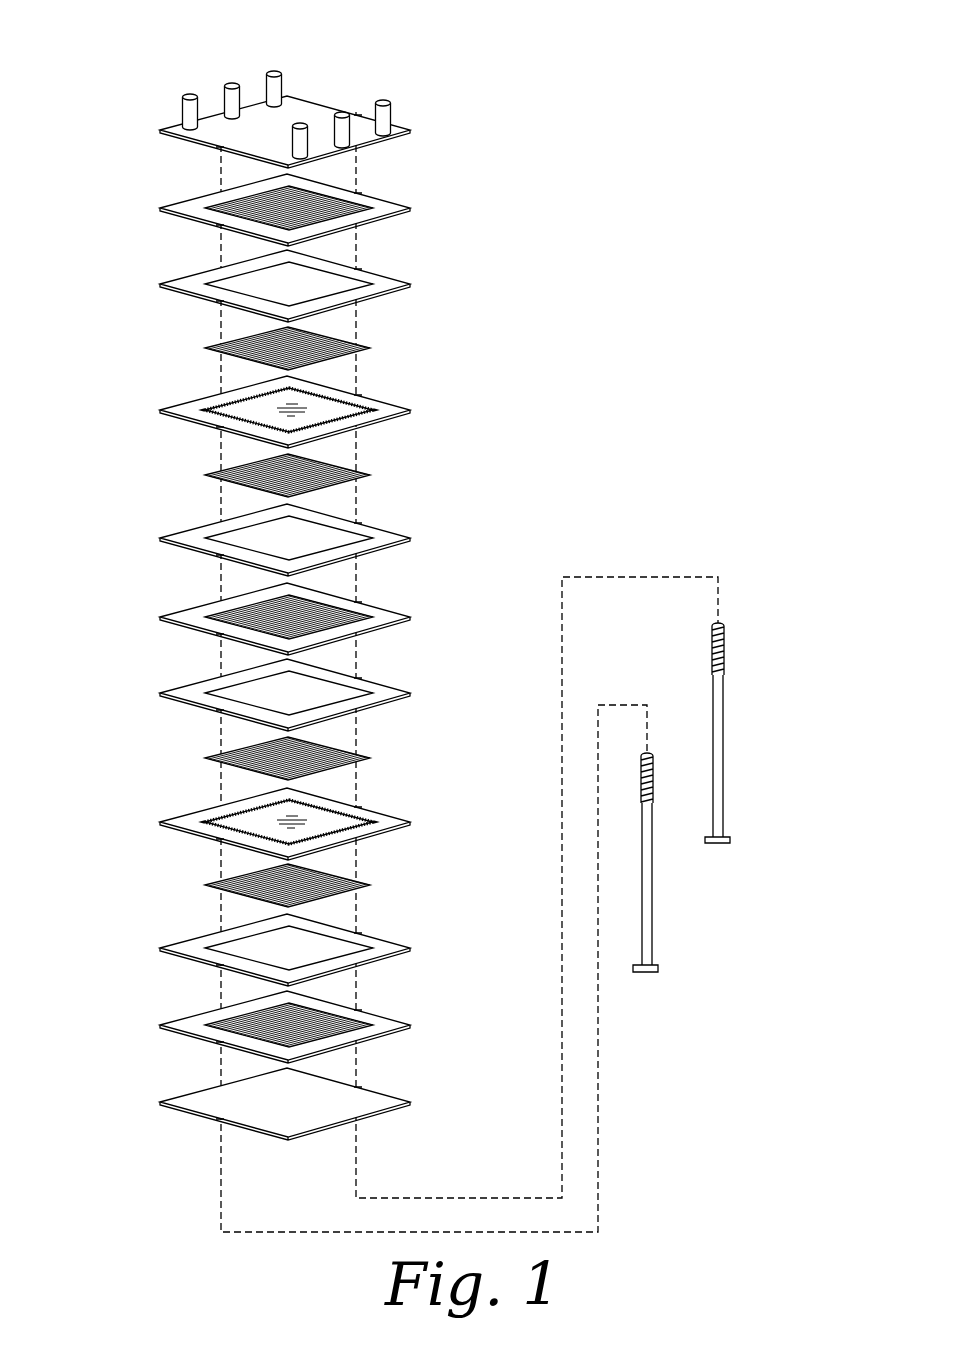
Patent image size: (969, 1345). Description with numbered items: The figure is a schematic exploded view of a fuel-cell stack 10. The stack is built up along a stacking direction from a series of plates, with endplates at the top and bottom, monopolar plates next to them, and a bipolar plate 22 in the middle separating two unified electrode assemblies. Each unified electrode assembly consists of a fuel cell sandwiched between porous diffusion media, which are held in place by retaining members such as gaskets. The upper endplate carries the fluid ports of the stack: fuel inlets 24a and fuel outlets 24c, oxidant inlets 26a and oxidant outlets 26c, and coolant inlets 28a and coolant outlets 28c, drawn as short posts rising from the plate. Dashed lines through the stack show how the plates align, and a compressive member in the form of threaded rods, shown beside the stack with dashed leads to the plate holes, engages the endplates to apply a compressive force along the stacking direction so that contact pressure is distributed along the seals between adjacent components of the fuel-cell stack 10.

The fuel-cell stack 10 is at (68, 123).
The bipolar plates 22 is at (161, 617).
The fuel inlets 24a is at (300, 126).
The fuel outlets 24c is at (274, 74).
The oxidant inlets 26a is at (390, 110).
The oxidant outlets 26c is at (183, 108).
The coolant inlets 28a is at (343, 115).
The coolant outlets 28c is at (230, 86).